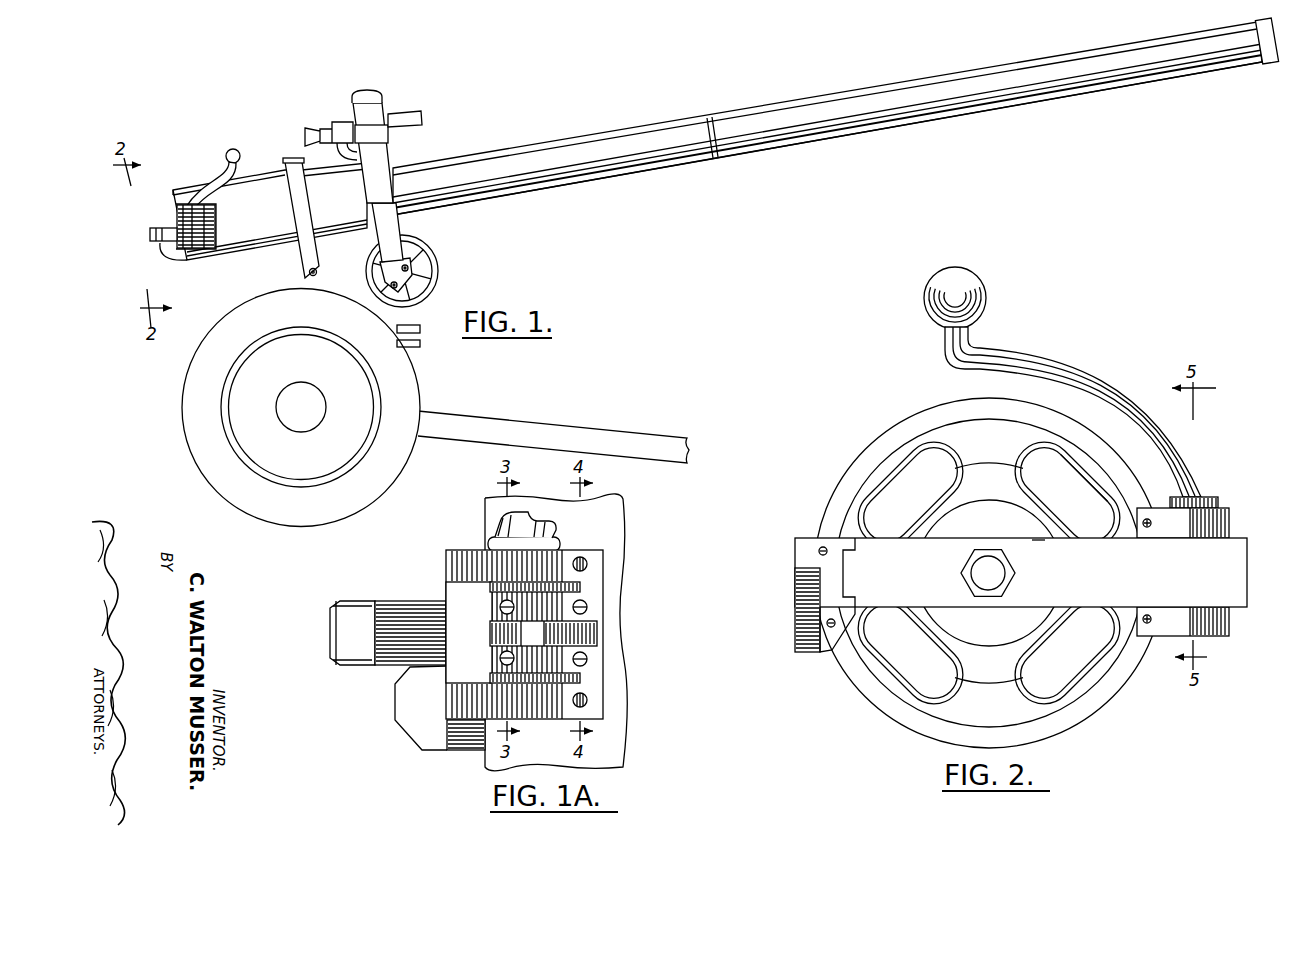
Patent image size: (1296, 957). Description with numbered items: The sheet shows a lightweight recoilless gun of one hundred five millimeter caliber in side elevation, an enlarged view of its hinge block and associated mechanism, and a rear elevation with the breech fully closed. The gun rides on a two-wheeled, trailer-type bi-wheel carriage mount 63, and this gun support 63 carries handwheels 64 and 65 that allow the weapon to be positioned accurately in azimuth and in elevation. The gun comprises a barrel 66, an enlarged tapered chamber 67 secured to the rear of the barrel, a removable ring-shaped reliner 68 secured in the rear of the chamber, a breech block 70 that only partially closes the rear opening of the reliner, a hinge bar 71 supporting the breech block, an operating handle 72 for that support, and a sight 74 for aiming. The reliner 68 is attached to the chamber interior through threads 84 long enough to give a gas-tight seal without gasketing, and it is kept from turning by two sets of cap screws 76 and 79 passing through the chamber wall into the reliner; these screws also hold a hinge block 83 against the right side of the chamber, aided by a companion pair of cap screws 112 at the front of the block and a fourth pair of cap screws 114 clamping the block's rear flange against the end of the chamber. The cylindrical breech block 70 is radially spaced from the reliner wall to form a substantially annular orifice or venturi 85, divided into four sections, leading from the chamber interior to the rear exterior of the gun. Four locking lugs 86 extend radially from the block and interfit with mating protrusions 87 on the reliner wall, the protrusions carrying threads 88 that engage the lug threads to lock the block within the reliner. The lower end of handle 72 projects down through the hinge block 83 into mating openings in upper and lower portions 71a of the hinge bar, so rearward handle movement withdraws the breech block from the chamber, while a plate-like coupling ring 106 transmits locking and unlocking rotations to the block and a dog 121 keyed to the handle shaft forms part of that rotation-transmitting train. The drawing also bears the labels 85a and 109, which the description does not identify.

In FIG. 1, the bi-wheel carriage mount 63 is at (615, 440).
In FIG. 1, the handwheel 64 is at (290, 283).
In FIG. 1, the handwheel 65 is at (440, 263).
In FIG. 1, the barrel 66 is at (1045, 88).
In FIG. 1, the chamber 67 is at (211, 270).
In FIG. 1A, the chamber 67 is at (606, 524).
In FIG. 2, the chamber 67 is at (880, 447).
In FIG. 2, the reliner 68 is at (855, 527).
In FIG. 2, the breech block 70 is at (1045, 633).
In FIG. 1, the hinge bar 71 is at (173, 222).
In FIG. 1A, the hinge bar 71 is at (461, 595).
In FIG. 2, the hinge bar 71 is at (1238, 574).
In FIG. 1A, the upper and lower portions of hinge bar 71a is at (582, 588).
In FIG. 1, the operating handle 72 is at (208, 178).
In FIG. 1A, the operating handle 72 is at (497, 527).
In FIG. 2, the operating handle 72 is at (1097, 372).
In FIG. 1, the sight 74 is at (410, 116).
In FIG. 1A, the cap screws 76 is at (497, 607).
In FIG. 1A, the cap screws 79 is at (590, 610).
In FIG. 1, the hinge block 83 is at (216, 217).
In FIG. 1A, the hinge block 83 is at (455, 565).
In FIG. 2, the hinge block 83 is at (1230, 523).
In FIG. 2, the threads 84 is at (838, 656).
In FIG. 2, the annular orifice 85 is at (900, 500).
In FIG. 2, the slot ends 85a is at (1058, 475).
In FIG. 2, the locking lugs 86 is at (992, 470).
In FIG. 2, the mating protrusions 87 is at (978, 462).
In FIG. 2, the threads 88 is at (1003, 679).
In FIG. 2, the coupling ring 106 is at (1035, 528).
In FIG. 1, the nut 109 is at (150, 236).
In FIG. 1A, the nut 109 is at (345, 634).
In FIG. 2, the nut 109 is at (975, 580).
In FIG. 1A, the cap screws 112 is at (590, 566).
In FIG. 2, the cap screws 114 is at (1147, 528).
In FIG. 1A, the dog 121 is at (598, 634).